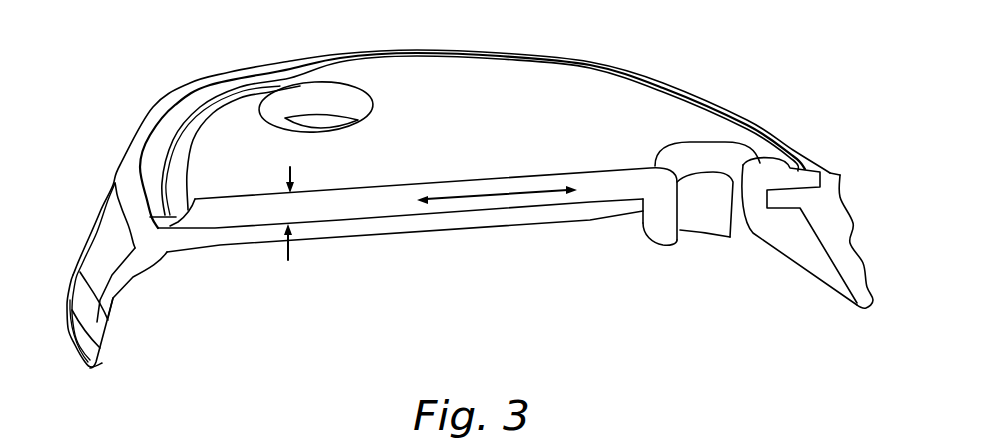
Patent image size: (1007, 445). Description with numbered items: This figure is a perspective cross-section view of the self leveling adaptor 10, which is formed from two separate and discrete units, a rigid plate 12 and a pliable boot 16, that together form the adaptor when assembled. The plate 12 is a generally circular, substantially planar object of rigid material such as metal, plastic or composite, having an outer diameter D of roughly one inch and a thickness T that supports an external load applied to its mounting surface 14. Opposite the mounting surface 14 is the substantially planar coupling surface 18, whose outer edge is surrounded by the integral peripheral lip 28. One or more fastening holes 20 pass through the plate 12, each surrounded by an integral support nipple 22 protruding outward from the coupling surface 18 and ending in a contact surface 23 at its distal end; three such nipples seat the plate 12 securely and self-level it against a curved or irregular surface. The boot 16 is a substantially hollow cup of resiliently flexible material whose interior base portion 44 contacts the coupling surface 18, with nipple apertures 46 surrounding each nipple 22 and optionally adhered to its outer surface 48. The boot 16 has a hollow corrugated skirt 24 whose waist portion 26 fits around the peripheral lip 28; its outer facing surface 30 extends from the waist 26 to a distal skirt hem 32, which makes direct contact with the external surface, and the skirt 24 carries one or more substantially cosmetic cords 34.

The self leveling adaptor 10 is at (166, 52).
The plate 12 is at (517, 68).
The mounting surface 14 is at (483, 141).
The boot 16 is at (133, 280).
The coupling surface 18 is at (510, 208).
The fastening hole 20 is at (333, 97).
The support nipple 22 is at (667, 243).
The contact surface 23 is at (670, 242).
The skirt 24 is at (77, 273).
The waist portion 26 is at (840, 177).
The peripheral lip 28 is at (798, 162).
The outer facing surface 30 is at (113, 300).
The skirt hem 32 is at (80, 355).
The cords 34 is at (100, 235).
The interior base portion 44 is at (385, 213).
The nipple aperture 46 is at (643, 224).
The nipple outer surface 48 is at (643, 208).
The outer diameter D is at (453, 198).
The thickness T is at (288, 257).